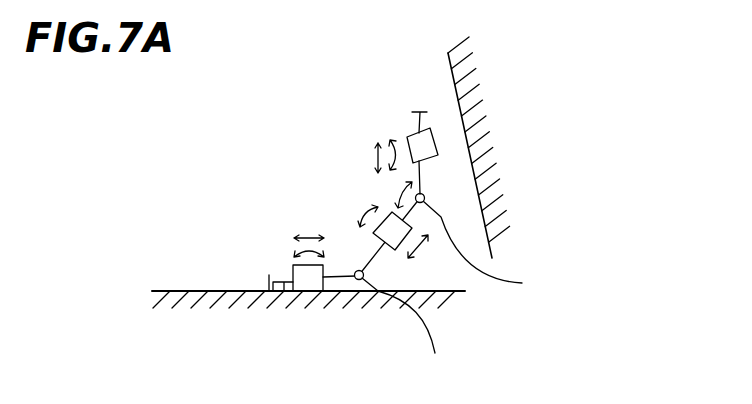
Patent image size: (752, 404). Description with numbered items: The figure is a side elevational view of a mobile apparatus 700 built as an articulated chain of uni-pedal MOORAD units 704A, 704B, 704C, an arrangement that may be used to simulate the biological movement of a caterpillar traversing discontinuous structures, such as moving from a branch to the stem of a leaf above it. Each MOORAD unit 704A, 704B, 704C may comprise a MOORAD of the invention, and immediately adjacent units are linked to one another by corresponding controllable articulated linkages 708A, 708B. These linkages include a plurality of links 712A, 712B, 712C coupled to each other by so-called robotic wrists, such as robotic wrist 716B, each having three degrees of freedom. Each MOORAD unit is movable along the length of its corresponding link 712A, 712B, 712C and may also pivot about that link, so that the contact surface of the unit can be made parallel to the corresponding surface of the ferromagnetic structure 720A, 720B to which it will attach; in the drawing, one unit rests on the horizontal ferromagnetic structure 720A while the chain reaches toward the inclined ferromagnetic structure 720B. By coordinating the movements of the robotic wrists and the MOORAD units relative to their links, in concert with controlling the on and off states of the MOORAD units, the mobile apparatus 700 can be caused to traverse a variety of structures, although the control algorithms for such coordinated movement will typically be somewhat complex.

The mobile apparatus 700 is at (302, 203).
The MOORAD unit 704A is at (295, 264).
The MOORAD unit 704B is at (396, 250).
The MOORAD unit 704C is at (410, 137).
The controllable articulated linkage 708A is at (362, 306).
The controllable articulated linkage 708B is at (446, 189).
The link 712A is at (283, 292).
The link 712B is at (368, 254).
The link 712C is at (422, 121).
The robotic wrist 716B is at (470, 289).
The ferromagnetic structure 720A is at (182, 288).
The ferromagnetic structure 720B is at (447, 67).